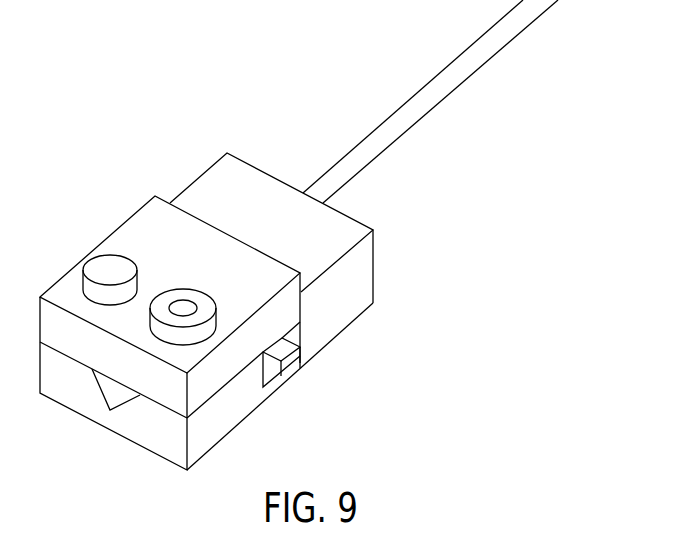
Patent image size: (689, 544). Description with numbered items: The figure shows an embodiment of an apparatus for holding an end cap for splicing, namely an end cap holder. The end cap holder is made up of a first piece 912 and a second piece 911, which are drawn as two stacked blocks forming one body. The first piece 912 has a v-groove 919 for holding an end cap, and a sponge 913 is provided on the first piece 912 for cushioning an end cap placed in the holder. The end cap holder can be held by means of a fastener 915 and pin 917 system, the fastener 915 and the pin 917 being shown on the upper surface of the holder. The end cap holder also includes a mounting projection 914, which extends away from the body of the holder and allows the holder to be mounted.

The second piece 911 is at (140, 225).
The first piece 912 is at (252, 180).
The sponge 913 is at (293, 355).
The mounting projection 914 is at (462, 70).
The fastener 915 is at (193, 290).
The pin 917 is at (102, 252).
The v-groove 919 is at (110, 410).